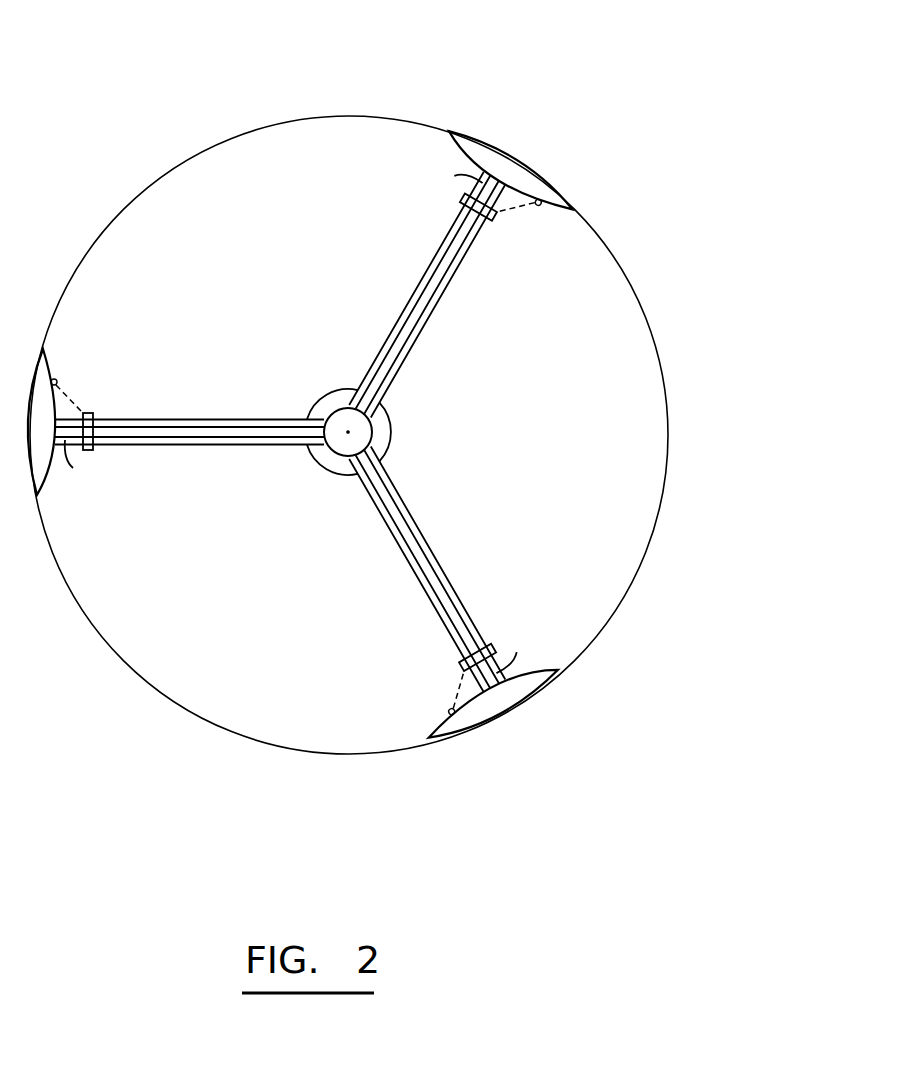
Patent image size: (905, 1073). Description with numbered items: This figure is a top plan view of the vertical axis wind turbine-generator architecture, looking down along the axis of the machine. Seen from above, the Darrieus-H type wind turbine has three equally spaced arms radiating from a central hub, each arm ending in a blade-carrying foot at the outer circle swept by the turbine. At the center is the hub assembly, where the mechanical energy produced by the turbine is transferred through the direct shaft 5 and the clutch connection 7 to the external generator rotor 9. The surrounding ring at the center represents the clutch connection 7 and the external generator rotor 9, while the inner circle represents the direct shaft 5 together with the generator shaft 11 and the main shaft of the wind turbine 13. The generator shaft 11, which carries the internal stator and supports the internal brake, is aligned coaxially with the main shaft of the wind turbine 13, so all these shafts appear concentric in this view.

The direct shaft 5 is at (432, 412).
The clutch connection 7 is at (318, 465).
The external generator rotor 9 is at (322, 486).
The generator shaft 11 is at (393, 425).
The main shaft of the wind turbine 13 is at (432, 412).